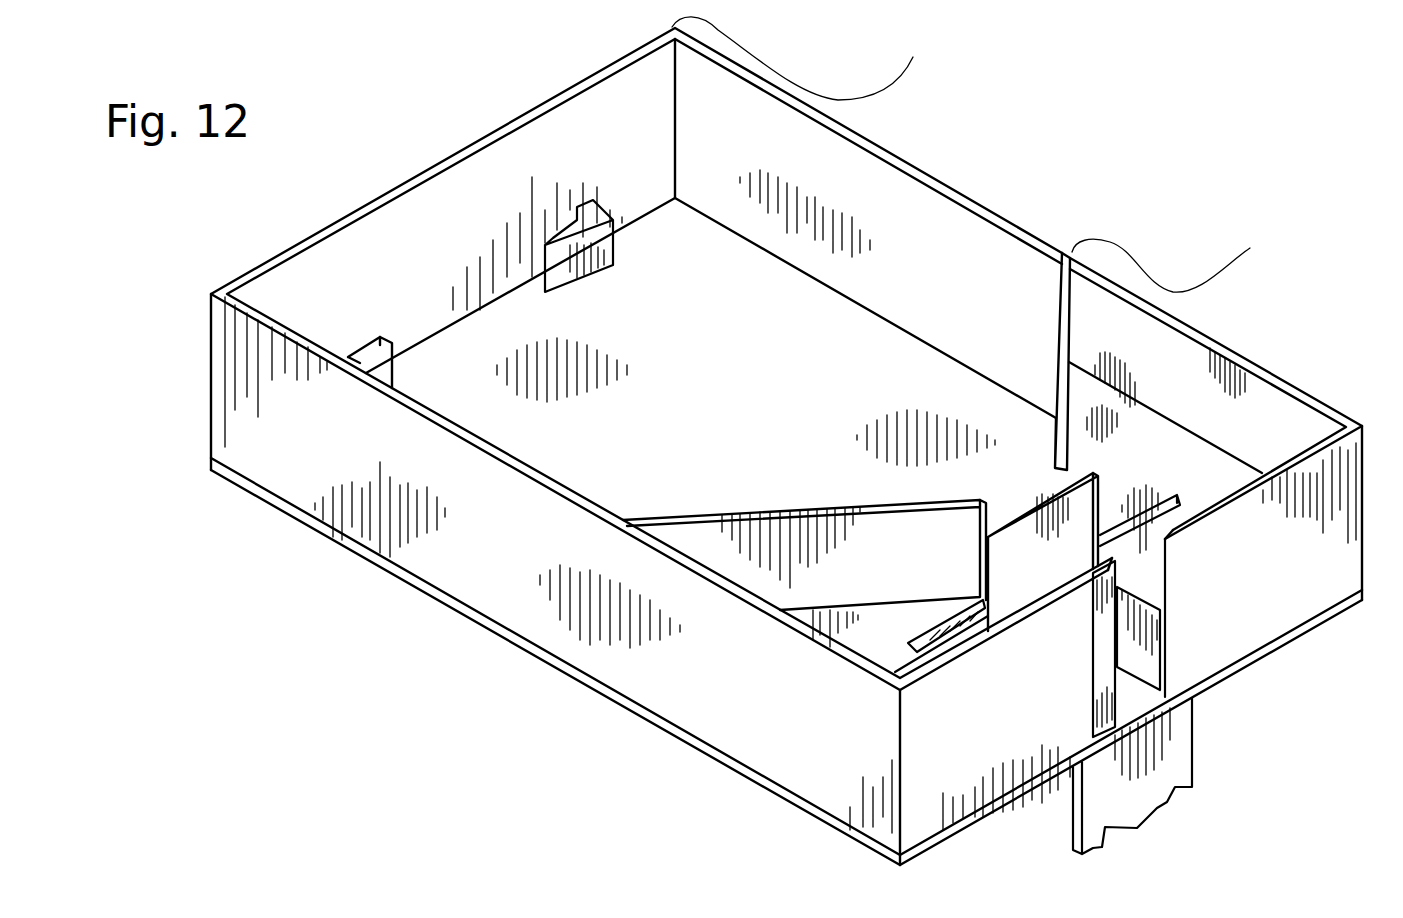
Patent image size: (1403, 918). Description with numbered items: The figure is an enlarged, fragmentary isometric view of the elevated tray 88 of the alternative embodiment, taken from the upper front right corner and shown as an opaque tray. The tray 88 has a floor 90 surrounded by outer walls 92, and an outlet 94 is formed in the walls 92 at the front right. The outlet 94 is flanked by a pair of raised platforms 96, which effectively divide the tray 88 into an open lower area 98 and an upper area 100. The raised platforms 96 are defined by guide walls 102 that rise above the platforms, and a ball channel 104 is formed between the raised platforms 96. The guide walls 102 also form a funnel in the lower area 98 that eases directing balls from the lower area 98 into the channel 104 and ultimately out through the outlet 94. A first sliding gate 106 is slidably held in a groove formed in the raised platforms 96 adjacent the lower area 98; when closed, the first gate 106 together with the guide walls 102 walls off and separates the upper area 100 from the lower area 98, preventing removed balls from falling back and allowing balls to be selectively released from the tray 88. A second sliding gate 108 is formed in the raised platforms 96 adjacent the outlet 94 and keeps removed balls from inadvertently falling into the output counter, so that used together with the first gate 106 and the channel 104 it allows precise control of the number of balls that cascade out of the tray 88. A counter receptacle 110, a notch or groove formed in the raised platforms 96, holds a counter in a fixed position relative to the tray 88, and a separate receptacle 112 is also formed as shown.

The elevated tray 88 is at (216, 269).
The floor 90 is at (748, 397).
The outer walls 92 is at (946, 291).
The outlet 94 is at (1137, 691).
The raised platforms 96 is at (1155, 438).
The lower area 98 is at (1068, 258).
The upper area 100 is at (1362, 425).
The guide walls 102 is at (949, 573).
The ball channel 104 is at (1133, 657).
The first sliding gate 106 is at (1054, 577).
The second sliding gate 108 is at (1106, 648).
The counter receptacle 110 is at (1160, 494).
The separate receptacle 112 is at (610, 245).